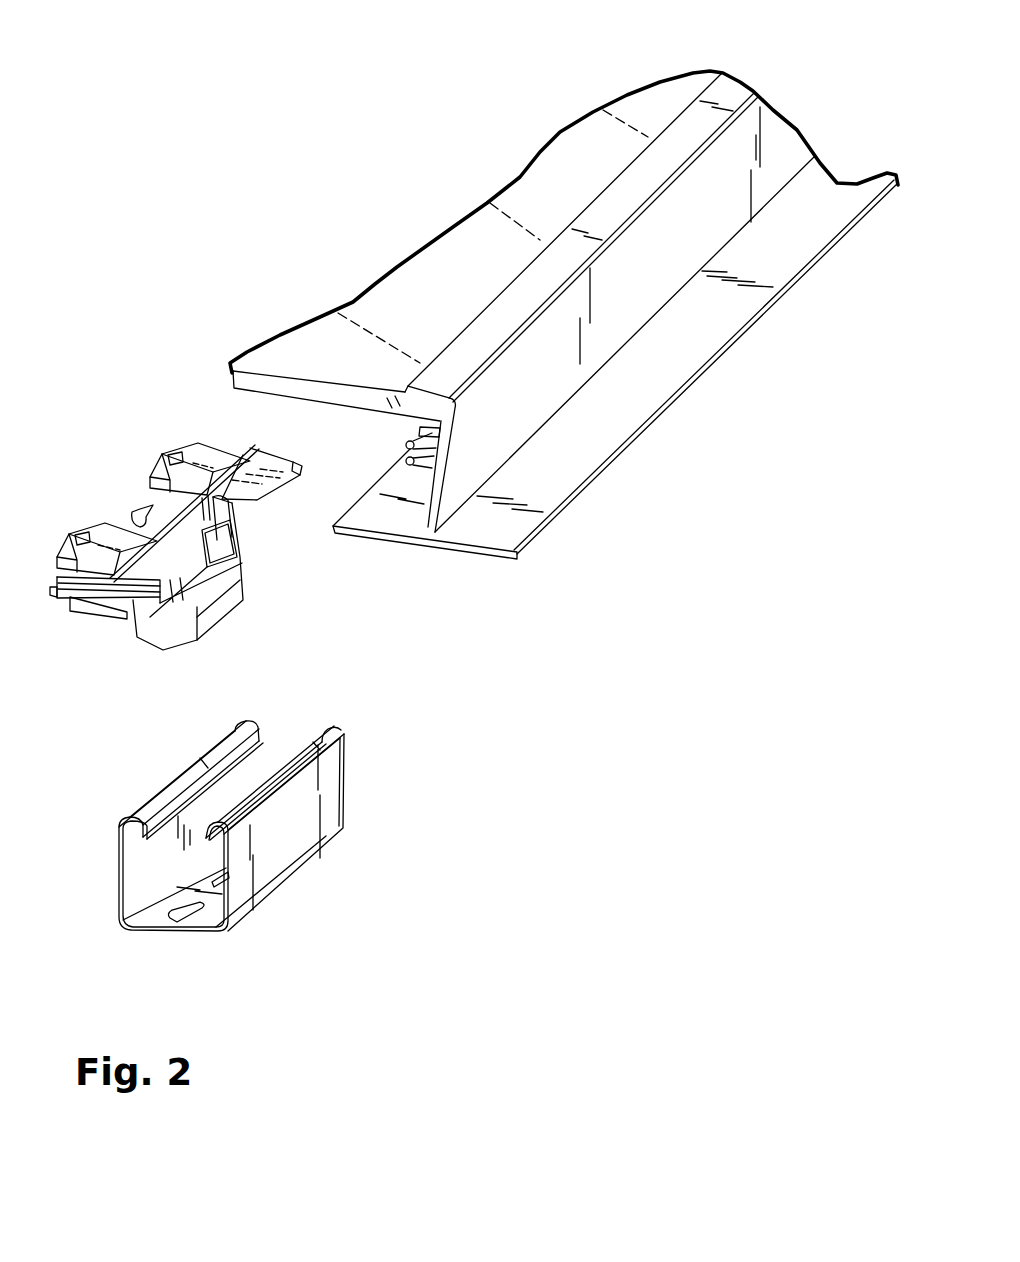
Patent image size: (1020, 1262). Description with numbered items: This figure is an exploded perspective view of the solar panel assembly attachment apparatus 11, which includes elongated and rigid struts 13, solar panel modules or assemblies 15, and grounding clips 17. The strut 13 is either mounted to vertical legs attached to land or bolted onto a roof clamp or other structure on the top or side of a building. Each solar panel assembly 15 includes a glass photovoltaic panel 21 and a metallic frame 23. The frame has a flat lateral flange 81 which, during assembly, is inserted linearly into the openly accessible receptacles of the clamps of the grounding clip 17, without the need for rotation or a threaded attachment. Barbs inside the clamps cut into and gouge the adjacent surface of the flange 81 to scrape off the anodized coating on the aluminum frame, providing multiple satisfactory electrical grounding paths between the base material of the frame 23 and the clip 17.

The solar panel assembly attachment apparatus 11 is at (223, 242).
The strut 13 is at (323, 862).
The solar panel assembly 15 is at (737, 93).
The grounding clip 17 is at (162, 454).
The glass photovoltaic panel 21 is at (452, 250).
The metallic frame 23 is at (787, 137).
The flat lateral flange 81 is at (396, 518).